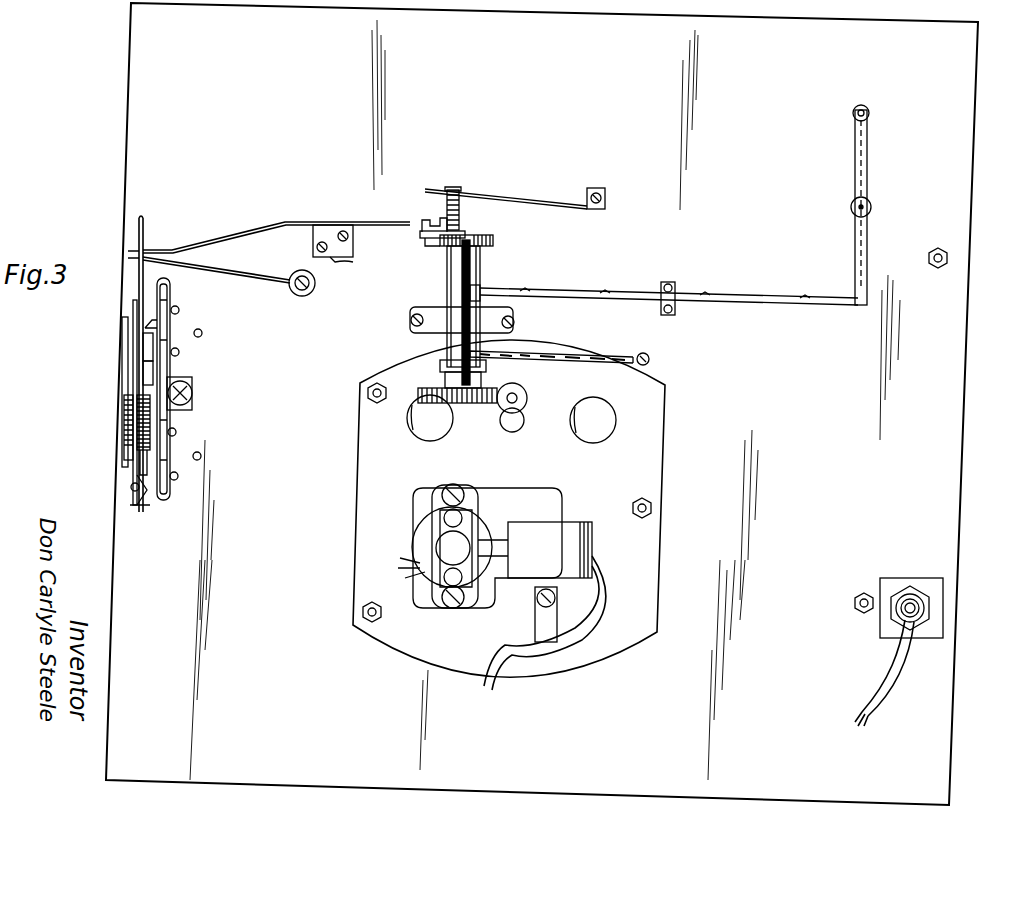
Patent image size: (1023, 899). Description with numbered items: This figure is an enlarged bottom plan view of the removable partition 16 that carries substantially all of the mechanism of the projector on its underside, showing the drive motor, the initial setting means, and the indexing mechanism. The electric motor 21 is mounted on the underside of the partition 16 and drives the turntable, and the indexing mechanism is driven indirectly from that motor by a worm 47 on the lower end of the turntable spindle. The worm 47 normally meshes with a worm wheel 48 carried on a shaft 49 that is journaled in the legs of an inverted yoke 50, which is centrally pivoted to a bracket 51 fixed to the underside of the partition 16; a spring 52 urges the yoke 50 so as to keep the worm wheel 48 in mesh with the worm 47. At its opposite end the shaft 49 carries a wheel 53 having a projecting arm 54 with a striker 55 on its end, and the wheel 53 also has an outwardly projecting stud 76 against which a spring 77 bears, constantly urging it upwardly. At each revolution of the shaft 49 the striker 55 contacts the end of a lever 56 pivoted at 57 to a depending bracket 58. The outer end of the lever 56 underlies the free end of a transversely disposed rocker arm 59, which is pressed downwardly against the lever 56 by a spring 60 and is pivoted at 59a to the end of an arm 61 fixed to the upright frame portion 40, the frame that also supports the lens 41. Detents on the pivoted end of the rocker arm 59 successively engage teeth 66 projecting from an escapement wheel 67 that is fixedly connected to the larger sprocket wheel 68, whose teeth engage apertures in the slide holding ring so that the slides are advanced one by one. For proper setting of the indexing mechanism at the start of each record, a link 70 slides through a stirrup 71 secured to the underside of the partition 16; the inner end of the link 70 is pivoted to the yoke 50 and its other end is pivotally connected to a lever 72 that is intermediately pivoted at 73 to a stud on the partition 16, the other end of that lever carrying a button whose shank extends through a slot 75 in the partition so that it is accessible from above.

The removable partition 16 is at (958, 142).
The electric motor 21 is at (491, 504).
The upright frame portion 40 is at (124, 432).
The lens 41 is at (185, 395).
The worm 47 is at (520, 396).
The worm wheel 48 is at (470, 420).
The shaft 49 is at (455, 350).
The inverted yoke 50 is at (447, 290).
The bracket 51 is at (500, 320).
The spring 52 is at (560, 355).
The wheel 53 is at (492, 222).
The projecting arm 54 is at (428, 246).
The striker 55 is at (422, 224).
The lever 56 is at (285, 222).
The pivot 57 is at (335, 224).
The depending bracket 58 is at (353, 262).
The rocker arm 59 is at (143, 232).
The pivot 59a is at (131, 489).
The spring 60 is at (270, 262).
The arm 61 is at (133, 446).
The teeth 66 is at (143, 347).
The escapement wheel 67 is at (143, 375).
The sprocket wheel 68 is at (165, 325).
The link 70 is at (720, 296).
The stirrup 71 is at (668, 300).
The lever 72 is at (858, 245).
The pivot 73 is at (871, 205).
The slot 75 is at (869, 113).
The stud 76 is at (455, 187).
The spring 77 is at (548, 190).